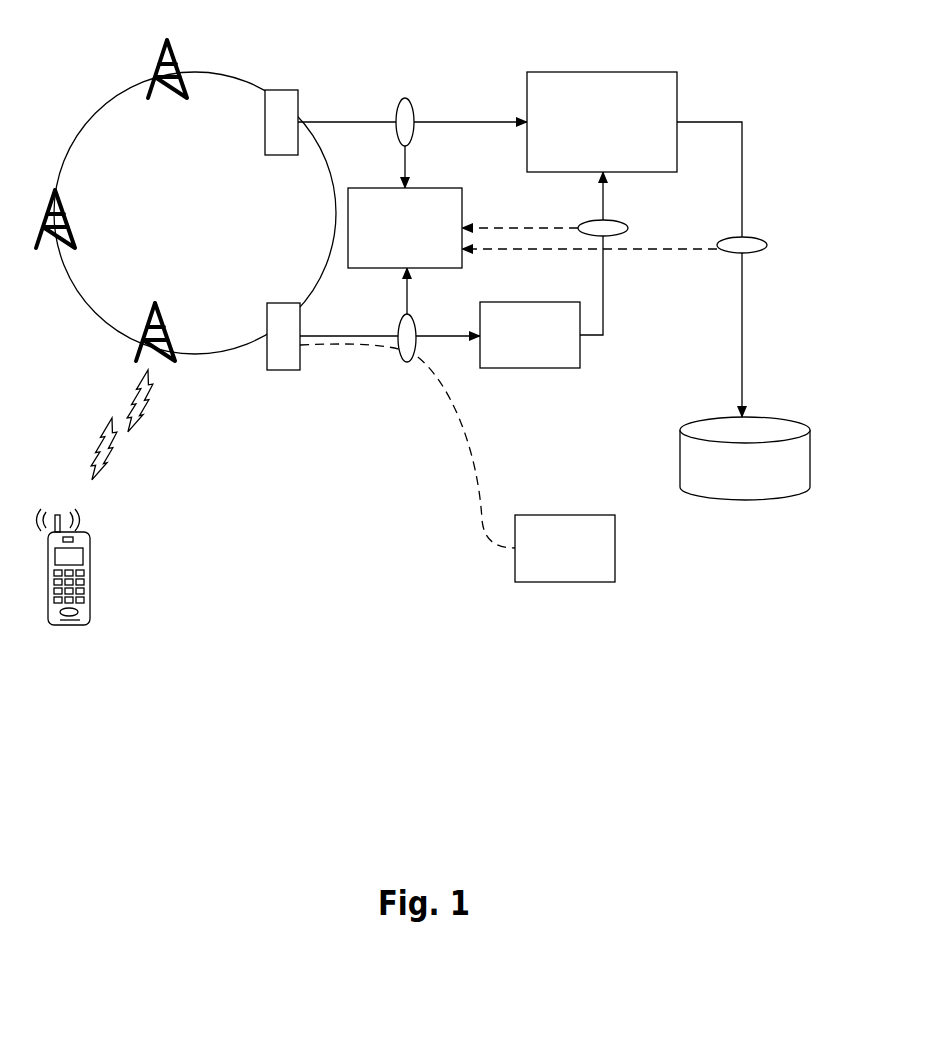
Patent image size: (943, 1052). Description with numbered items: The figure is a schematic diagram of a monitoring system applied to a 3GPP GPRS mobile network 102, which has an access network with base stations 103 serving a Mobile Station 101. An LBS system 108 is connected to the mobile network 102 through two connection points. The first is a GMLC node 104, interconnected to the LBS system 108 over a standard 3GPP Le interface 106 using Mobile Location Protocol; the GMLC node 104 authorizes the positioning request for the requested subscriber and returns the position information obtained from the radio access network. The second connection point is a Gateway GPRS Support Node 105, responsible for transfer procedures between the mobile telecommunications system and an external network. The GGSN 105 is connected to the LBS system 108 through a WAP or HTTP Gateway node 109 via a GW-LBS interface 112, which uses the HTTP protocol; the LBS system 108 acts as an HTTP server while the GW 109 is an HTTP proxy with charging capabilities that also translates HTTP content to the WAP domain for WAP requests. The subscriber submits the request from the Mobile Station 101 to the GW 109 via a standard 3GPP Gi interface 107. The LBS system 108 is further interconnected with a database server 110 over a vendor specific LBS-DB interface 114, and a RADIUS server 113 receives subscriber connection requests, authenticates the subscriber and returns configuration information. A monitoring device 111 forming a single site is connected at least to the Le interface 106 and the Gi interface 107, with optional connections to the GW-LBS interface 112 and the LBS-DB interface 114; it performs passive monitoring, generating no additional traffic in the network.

The mobile station 101 is at (90, 548).
The 3GPP GPRS mobile network 102 is at (213, 73).
The base station 103 is at (150, 302).
The GMLC node 104 is at (300, 88).
The Gateway GPRS Support Node (GGSN) 105 is at (282, 370).
The Le interface 106 is at (412, 102).
The Gi interface 107 is at (413, 318).
The LBS system 108 is at (658, 72).
The WAP or HTTP Gateway (GW) node 109 is at (530, 370).
The database server 110 is at (760, 413).
The monitoring device 111 is at (413, 202).
The GW-LBS interface 112 is at (608, 222).
The RADIUS server 113 is at (532, 515).
The LBS-DB interface 114 is at (727, 258).